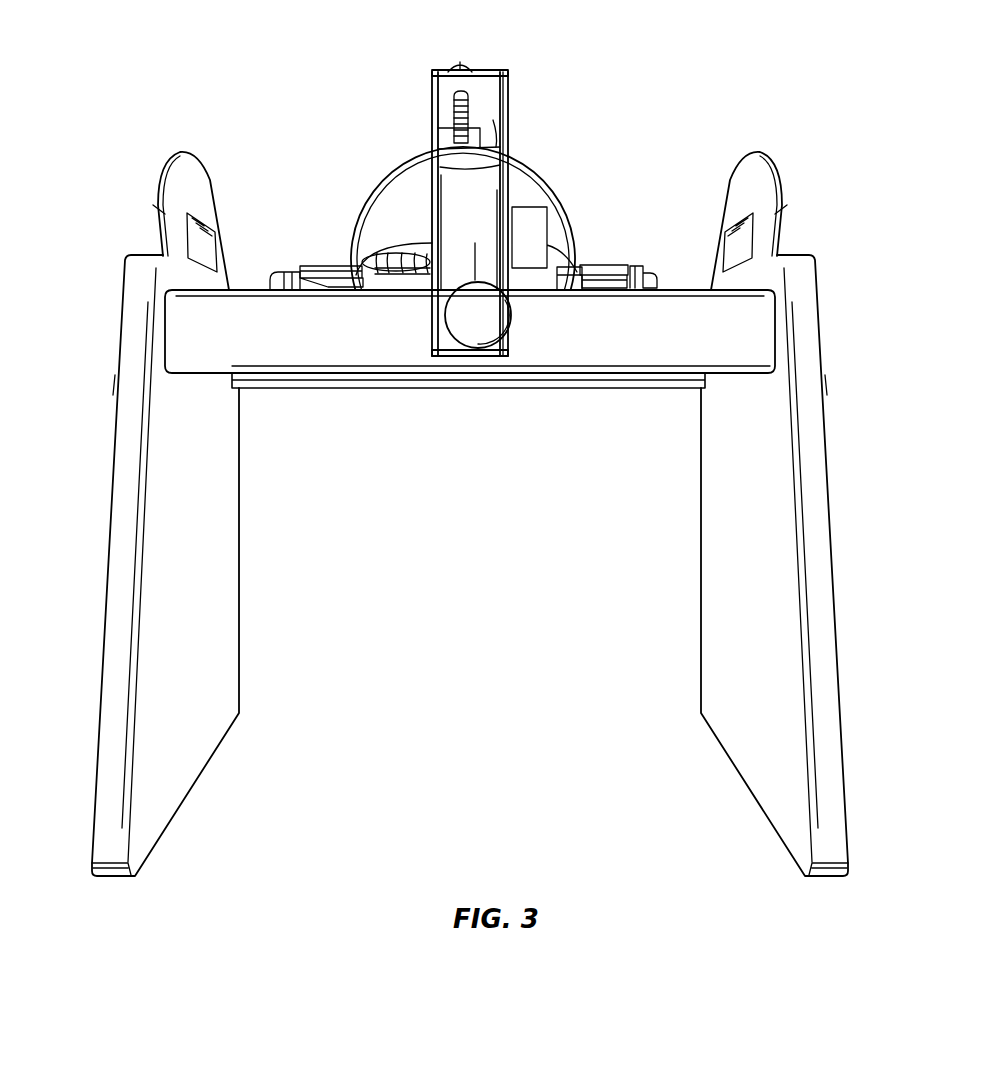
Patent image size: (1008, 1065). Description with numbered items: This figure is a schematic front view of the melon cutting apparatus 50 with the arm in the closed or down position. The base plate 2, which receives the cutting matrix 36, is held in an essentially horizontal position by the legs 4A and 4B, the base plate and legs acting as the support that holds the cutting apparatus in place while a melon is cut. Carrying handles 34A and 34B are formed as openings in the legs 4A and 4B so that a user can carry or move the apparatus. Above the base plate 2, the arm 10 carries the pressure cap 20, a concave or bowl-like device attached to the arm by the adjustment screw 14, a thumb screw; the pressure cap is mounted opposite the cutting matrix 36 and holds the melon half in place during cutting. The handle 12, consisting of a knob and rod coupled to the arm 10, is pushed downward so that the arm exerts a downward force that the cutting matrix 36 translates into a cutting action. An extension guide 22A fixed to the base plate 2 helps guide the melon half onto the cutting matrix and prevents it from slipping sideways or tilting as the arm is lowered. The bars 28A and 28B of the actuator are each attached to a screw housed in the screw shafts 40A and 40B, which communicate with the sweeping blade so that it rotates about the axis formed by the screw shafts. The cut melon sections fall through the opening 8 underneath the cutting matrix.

The base plate 2 is at (647, 345).
The leg 4A is at (820, 548).
The leg 4B is at (122, 455).
The opening 8 is at (452, 433).
The arm 10 is at (487, 197).
The handle 12 is at (478, 322).
The adjustment screw 14 is at (462, 66).
The pressure cap 20 is at (560, 213).
The extension guide 22A is at (569, 285).
The bar 28A is at (647, 268).
The bar 28B is at (273, 270).
The carrying handle 34A is at (748, 248).
The carrying handle 34B is at (188, 248).
The cutting matrix 36 is at (390, 258).
The screw shaft 40A is at (603, 266).
The screw shaft 40B is at (322, 263).
The apparatus 50 is at (681, 867).